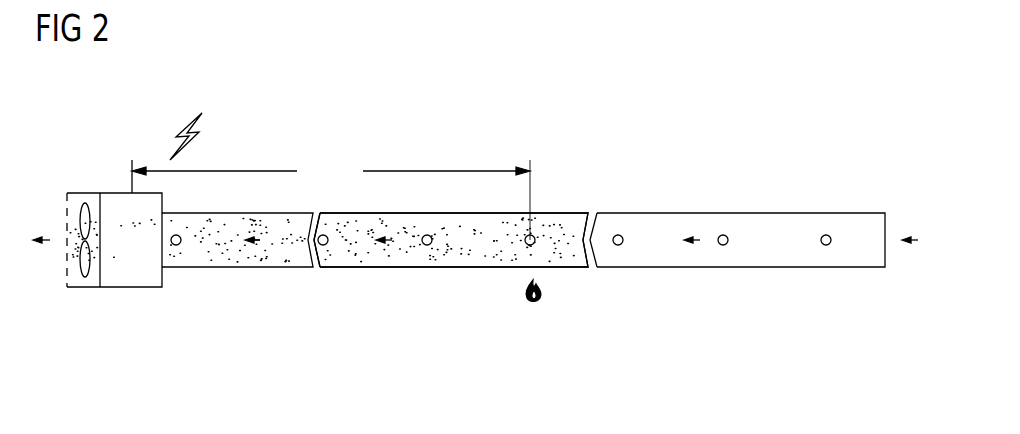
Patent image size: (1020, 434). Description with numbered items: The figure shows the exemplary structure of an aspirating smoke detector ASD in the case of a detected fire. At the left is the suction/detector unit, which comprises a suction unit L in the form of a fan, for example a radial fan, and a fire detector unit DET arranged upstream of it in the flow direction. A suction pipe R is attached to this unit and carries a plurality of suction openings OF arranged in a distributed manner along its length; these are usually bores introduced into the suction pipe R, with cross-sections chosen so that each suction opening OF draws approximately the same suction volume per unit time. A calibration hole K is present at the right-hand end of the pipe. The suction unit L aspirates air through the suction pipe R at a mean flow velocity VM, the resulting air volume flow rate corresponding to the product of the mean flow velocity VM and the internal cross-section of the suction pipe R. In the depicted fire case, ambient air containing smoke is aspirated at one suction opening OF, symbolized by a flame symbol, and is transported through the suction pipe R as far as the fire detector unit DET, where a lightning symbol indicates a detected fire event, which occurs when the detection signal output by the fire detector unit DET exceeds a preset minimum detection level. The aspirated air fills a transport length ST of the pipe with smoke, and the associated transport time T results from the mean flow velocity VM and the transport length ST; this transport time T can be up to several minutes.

The aspirating smoke detector ASD is at (262, 149).
The fire detector unit DET is at (114, 240).
The suction unit L is at (90, 283).
The transport length ST is at (331, 198).
The transport time T is at (331, 198).
The mean flow velocity VM is at (235, 242).
The suction openings OF is at (427, 246).
The suction pipe R is at (472, 268).
The calibration hole K is at (893, 238).